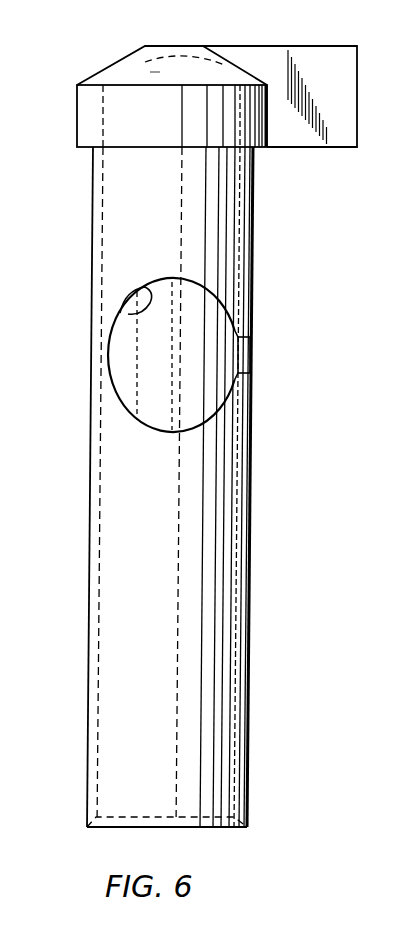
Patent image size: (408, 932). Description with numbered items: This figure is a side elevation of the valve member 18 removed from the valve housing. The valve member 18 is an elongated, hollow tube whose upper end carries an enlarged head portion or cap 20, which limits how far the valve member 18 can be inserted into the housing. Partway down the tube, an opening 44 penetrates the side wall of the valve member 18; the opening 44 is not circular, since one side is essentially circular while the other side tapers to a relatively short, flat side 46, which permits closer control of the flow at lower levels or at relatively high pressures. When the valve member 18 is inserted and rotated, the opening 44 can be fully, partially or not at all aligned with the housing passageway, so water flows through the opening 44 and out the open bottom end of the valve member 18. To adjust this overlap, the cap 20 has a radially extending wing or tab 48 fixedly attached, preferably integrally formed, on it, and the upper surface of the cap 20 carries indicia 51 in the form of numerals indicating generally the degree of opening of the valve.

The valve member 18 is at (89, 523).
The head portion 20 is at (78, 107).
The opening 44 is at (122, 312).
The flat side 46 is at (246, 352).
The tab 48 is at (323, 82).
The indicia 51 is at (158, 72).